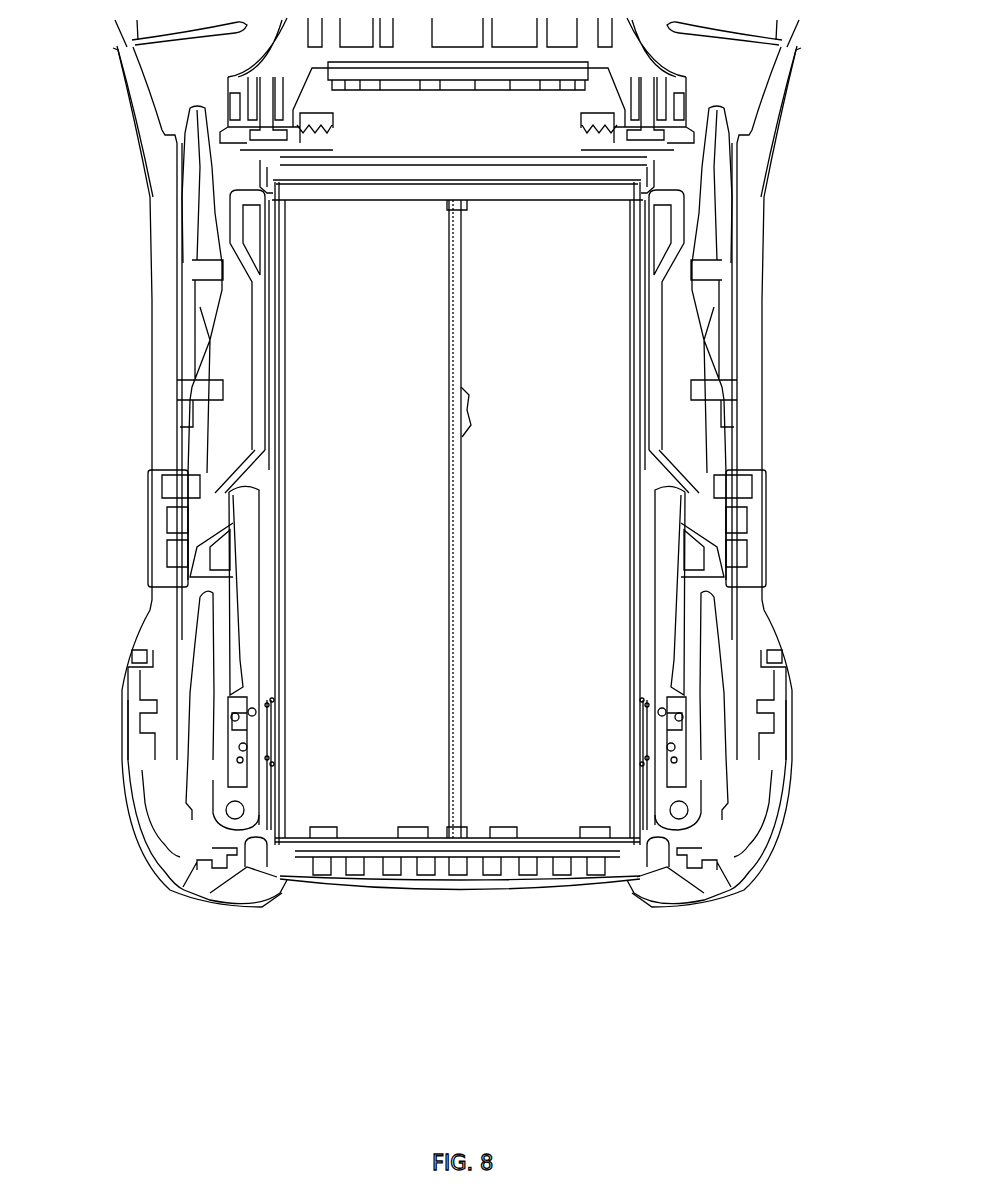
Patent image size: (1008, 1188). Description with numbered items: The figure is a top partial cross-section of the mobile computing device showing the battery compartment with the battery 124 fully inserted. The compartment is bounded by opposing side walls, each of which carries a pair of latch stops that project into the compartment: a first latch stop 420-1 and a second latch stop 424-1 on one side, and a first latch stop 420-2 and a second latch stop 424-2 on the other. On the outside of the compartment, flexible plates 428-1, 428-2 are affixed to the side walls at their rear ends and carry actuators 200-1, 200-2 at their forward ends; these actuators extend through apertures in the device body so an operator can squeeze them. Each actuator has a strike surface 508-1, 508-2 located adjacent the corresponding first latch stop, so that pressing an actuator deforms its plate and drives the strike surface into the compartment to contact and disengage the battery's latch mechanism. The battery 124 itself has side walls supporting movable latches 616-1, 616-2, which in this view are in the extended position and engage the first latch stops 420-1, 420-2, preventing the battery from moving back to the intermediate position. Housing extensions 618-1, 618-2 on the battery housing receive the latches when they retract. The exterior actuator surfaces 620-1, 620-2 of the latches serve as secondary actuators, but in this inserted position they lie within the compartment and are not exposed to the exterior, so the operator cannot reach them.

The battery 124 is at (253, 287).
The flexible plate 428-1 is at (200, 368).
The flexible plate 428-2 is at (717, 365).
The housing extension 618-1 is at (214, 485).
The housing extension 618-2 is at (701, 478).
The actuator 200-1 is at (152, 516).
The actuator 200-2 is at (767, 515).
The strike surface 508-1 is at (187, 578).
The strike surface 508-2 is at (730, 578).
The first latch stop 420-1 is at (190, 608).
The first latch stop 420-2 is at (730, 604).
The movable latch 616-1 is at (196, 650).
The movable latch 616-2 is at (718, 651).
The actuator surface 620-1 is at (215, 733).
The actuator surface 620-2 is at (702, 730).
The second latch stop 424-1 is at (193, 810).
The second latch stop 424-2 is at (718, 810).